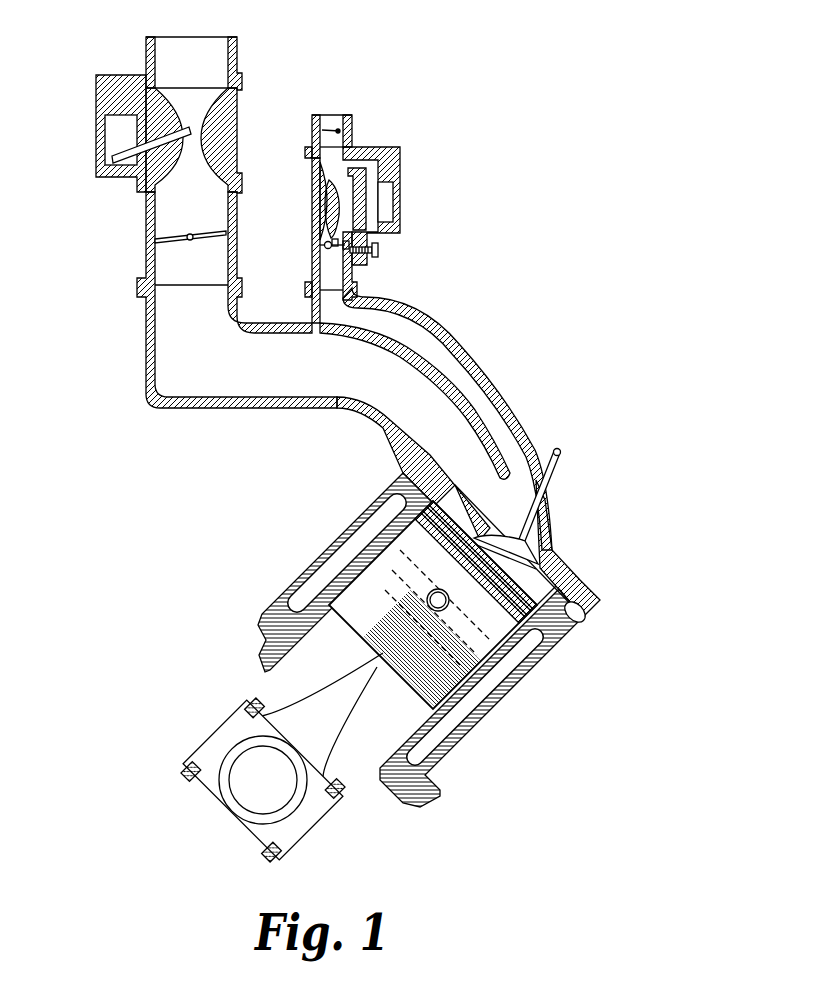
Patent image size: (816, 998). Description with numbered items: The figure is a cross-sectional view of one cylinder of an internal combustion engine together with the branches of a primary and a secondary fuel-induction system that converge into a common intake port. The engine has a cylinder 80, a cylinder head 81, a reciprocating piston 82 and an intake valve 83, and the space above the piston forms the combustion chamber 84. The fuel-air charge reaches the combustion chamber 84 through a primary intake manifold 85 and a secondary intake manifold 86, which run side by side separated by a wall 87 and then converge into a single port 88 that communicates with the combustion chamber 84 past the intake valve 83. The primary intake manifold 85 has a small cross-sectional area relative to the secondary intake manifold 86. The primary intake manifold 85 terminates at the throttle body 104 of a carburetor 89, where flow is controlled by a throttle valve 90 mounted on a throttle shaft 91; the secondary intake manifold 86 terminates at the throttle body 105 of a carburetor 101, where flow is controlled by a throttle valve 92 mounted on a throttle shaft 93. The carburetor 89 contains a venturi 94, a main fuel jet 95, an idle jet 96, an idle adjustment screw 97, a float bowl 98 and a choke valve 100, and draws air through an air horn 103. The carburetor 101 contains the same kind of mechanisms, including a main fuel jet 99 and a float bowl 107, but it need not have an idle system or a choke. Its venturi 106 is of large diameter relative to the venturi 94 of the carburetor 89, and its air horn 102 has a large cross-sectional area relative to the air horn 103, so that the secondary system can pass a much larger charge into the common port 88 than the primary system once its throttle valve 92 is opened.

The cylinder 80 is at (478, 738).
The cylinder head 81 is at (587, 611).
The reciprocating piston 82 is at (455, 680).
The intake valve 83 is at (527, 538).
The combustion chamber 84 is at (532, 583).
The primary intake manifold 85 is at (503, 425).
The secondary intake manifold 86 is at (424, 405).
The wall 87 is at (447, 364).
The single port 88 is at (508, 500).
The carburetor 89 is at (400, 168).
The throttle valve 90 is at (325, 245).
The throttle shaft 91 is at (333, 242).
The throttle valve 92 is at (183, 241).
The throttle shaft 93 is at (188, 234).
The venturi 94 is at (323, 204).
The main fuel jet 95 is at (322, 185).
The idle jet 96 is at (345, 246).
The idle adjustment screw 97 is at (378, 247).
The float bowl 98 is at (385, 200).
The main fuel jet 99 is at (120, 166).
The choke valve 100 is at (323, 130).
The carburetor 101 is at (96, 104).
The air horn 102 is at (240, 60).
The air horn 103 is at (352, 125).
The throttle body 104 is at (332, 268).
The throttle body 105 is at (148, 258).
The venturi 106 is at (210, 143).
The float bowl 107 is at (110, 134).